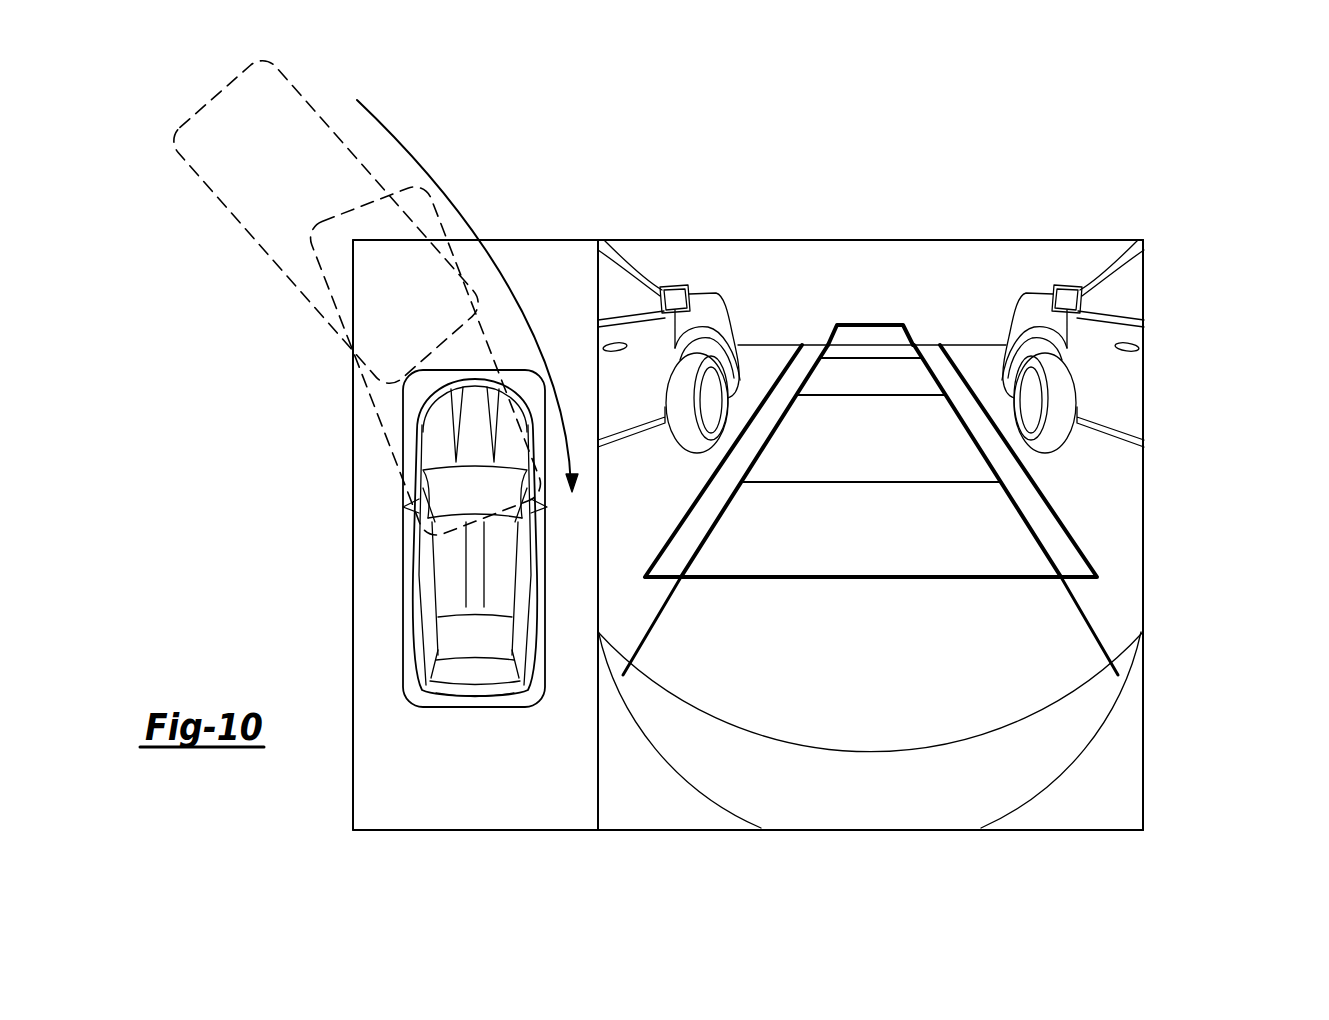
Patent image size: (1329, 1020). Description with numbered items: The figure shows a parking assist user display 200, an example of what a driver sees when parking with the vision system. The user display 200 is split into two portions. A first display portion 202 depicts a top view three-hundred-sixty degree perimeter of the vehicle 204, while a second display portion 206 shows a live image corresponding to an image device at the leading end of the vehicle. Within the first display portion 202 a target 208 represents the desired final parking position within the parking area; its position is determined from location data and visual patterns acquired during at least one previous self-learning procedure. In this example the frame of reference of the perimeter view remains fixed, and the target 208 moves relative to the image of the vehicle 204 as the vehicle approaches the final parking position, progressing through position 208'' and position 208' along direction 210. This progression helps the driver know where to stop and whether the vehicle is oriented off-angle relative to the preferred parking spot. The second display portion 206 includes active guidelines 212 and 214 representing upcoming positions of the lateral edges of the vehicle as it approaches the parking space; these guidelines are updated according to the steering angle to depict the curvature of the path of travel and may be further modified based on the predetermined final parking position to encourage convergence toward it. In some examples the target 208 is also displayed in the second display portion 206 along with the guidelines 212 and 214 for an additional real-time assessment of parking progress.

The parking assist user display 200 is at (1216, 247).
The first display portion 202 is at (523, 240).
The vehicle 204 is at (470, 683).
The second display portion 206 is at (1010, 240).
The target 208 is at (700, 516).
The target position 208' is at (305, 221).
The target position 208'' is at (408, 361).
The direction 210 is at (407, 140).
The active guideline 212 is at (1078, 613).
The active guideline 214 is at (665, 613).